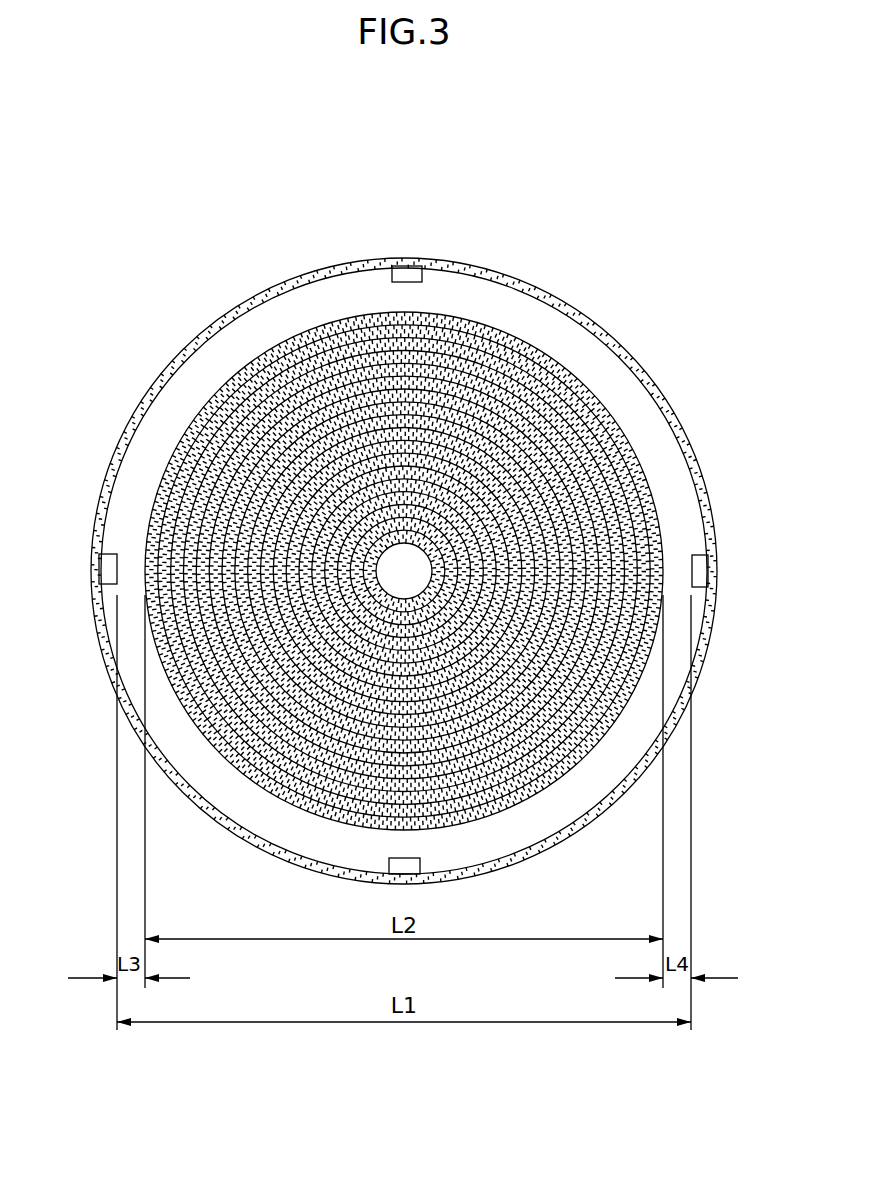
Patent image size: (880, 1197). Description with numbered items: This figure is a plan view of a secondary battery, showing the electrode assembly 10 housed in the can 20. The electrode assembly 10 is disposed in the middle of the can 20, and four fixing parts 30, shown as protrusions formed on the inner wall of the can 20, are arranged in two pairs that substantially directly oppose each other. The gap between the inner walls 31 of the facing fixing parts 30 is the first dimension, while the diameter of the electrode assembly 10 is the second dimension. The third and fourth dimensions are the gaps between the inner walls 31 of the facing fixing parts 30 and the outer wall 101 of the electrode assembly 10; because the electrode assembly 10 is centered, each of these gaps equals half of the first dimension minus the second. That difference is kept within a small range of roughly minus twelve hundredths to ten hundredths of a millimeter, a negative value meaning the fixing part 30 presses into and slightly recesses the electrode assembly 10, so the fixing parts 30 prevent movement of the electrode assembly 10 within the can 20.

The electrode assembly 10 is at (303, 328).
The outer wall of the electrode assembly 101 is at (241, 363).
The can 20 is at (700, 462).
The fixing part 30 is at (702, 568).
The inner wall of the fixing part 31 is at (119, 573).